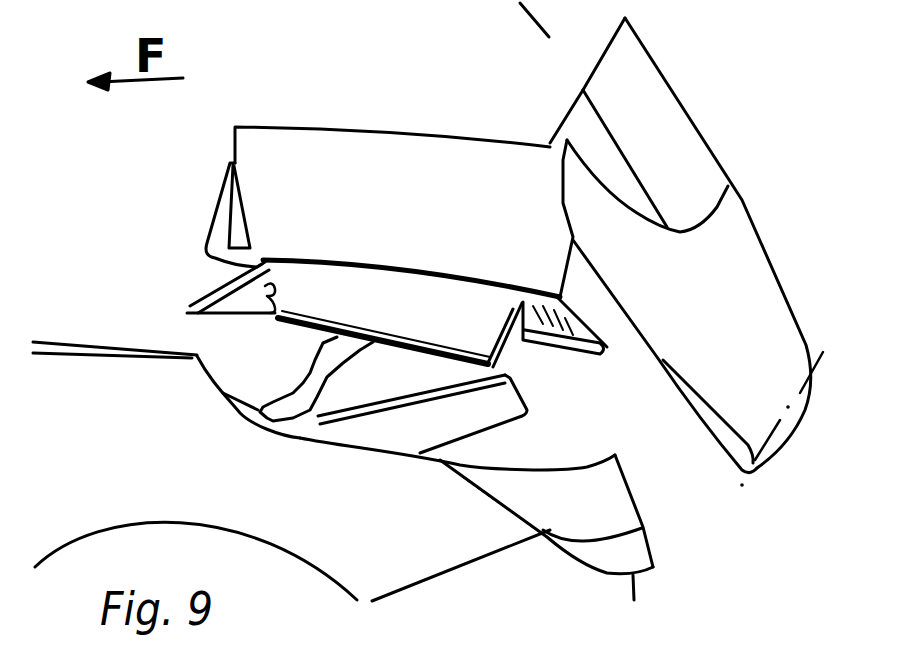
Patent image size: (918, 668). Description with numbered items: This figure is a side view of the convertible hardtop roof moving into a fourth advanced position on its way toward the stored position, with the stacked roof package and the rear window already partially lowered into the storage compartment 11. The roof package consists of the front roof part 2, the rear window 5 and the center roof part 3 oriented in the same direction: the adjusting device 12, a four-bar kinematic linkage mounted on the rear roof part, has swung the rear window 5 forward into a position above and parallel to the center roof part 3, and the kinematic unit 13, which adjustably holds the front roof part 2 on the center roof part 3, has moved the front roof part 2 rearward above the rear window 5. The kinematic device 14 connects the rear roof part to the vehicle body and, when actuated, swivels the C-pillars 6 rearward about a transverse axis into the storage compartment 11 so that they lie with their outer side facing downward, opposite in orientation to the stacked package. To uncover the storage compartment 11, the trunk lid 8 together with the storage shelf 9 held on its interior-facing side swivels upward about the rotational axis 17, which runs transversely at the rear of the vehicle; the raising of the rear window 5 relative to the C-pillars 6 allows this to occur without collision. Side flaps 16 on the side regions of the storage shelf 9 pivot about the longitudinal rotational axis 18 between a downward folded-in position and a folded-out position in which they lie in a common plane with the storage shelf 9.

The front roof part 2 is at (333, 137).
The center roof part 3 is at (405, 320).
The rear window 5 is at (205, 210).
The C-pillars 6 is at (493, 426).
The trunk lid 8 is at (743, 237).
The storage shelf 9 is at (612, 72).
The storage compartment 11 is at (661, 467).
The adjusting device 12 is at (572, 352).
The kinematic unit 13 is at (204, 292).
The kinematic device 14 is at (303, 370).
The side flaps 16 is at (577, 122).
The rotational axis 17 is at (730, 510).
The rotational axis 18 is at (527, 12).